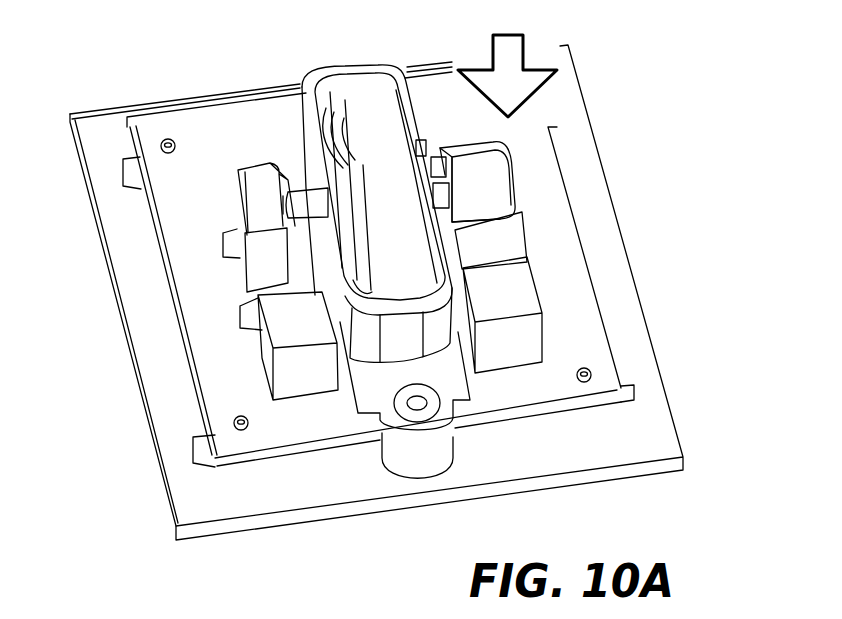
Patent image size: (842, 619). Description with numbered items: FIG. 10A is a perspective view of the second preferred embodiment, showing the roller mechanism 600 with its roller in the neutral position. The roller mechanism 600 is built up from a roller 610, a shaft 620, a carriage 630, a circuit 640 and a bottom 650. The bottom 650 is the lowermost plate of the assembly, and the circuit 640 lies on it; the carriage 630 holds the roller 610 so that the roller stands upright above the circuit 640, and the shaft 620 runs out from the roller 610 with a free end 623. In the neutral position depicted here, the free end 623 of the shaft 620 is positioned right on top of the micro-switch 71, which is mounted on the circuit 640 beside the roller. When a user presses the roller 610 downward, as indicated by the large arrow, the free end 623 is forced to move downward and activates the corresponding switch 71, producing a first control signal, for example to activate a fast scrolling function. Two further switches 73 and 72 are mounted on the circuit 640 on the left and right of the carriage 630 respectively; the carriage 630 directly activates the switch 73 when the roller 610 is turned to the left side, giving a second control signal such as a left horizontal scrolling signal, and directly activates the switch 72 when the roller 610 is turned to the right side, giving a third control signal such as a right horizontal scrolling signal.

The roller mechanism 600 is at (688, 186).
The roller 610 is at (387, 113).
The shaft 620 is at (517, 171).
The free end 623 is at (483, 200).
The carriage 630 is at (300, 115).
The circuit 640 is at (577, 305).
The bottom 650 is at (147, 340).
The micro-switch 71 is at (503, 243).
The switch 72 is at (527, 350).
The switch 73 is at (298, 373).